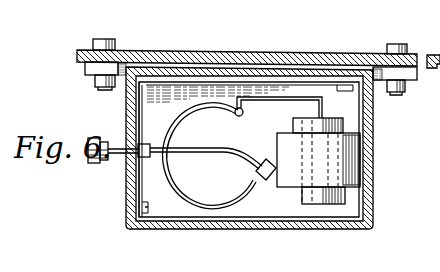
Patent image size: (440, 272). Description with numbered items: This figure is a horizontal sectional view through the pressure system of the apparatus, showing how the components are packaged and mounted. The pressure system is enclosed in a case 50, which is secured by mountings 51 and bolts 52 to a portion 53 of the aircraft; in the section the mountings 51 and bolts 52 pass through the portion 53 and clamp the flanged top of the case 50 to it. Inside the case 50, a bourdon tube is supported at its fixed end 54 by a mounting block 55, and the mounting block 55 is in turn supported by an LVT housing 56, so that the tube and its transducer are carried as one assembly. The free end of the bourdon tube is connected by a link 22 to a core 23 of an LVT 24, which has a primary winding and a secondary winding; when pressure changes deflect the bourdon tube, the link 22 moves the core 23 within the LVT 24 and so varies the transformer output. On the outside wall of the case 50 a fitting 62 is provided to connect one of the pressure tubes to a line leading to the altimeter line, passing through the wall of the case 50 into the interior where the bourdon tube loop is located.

The link 22 is at (323, 100).
The core 23 is at (362, 132).
The LVT 24 is at (346, 193).
The case 50 is at (125, 112).
The mounting 51 is at (83, 67).
The bolt 52 is at (93, 84).
The portion of the aircraft 53 is at (256, 31).
The fixed end 54 is at (257, 188).
The mounting block 55 is at (263, 162).
The LVT housing 56 is at (277, 140).
The fitting 62 is at (99, 165).